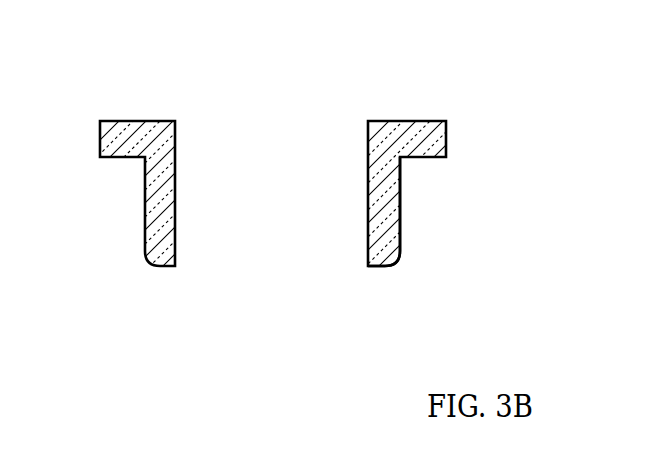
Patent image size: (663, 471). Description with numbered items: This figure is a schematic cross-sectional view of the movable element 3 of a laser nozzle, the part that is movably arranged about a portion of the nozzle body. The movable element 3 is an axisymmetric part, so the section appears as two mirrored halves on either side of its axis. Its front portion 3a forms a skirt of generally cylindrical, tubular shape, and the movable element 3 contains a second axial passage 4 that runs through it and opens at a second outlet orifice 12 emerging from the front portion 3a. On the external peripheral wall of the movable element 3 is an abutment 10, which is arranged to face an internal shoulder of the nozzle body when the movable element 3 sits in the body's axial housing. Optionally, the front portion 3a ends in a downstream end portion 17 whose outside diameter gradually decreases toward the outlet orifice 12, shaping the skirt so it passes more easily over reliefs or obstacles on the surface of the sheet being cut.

The movable element 3 is at (380, 137).
The front portion 3a is at (383, 227).
The second axial passage 4 is at (272, 183).
The abutment 10 is at (125, 161).
The second outlet orifice 12 is at (242, 250).
The downstream end portion 17 is at (397, 268).